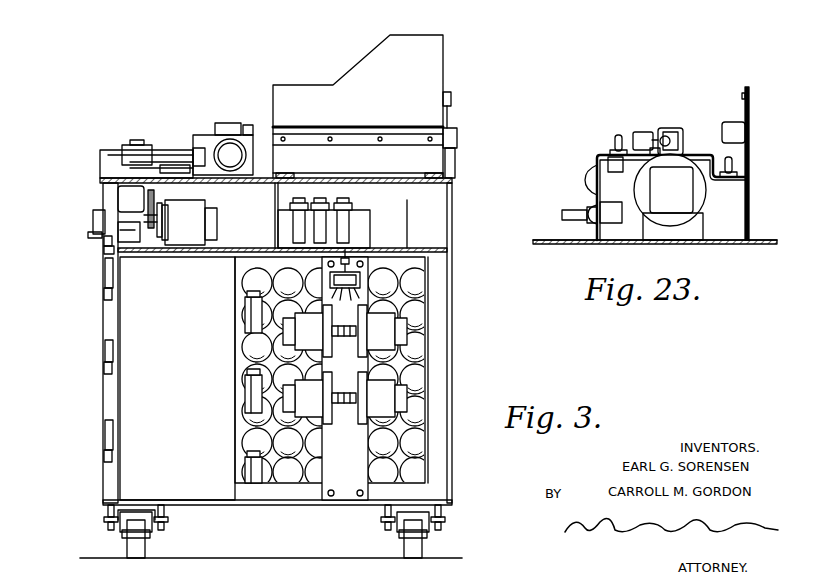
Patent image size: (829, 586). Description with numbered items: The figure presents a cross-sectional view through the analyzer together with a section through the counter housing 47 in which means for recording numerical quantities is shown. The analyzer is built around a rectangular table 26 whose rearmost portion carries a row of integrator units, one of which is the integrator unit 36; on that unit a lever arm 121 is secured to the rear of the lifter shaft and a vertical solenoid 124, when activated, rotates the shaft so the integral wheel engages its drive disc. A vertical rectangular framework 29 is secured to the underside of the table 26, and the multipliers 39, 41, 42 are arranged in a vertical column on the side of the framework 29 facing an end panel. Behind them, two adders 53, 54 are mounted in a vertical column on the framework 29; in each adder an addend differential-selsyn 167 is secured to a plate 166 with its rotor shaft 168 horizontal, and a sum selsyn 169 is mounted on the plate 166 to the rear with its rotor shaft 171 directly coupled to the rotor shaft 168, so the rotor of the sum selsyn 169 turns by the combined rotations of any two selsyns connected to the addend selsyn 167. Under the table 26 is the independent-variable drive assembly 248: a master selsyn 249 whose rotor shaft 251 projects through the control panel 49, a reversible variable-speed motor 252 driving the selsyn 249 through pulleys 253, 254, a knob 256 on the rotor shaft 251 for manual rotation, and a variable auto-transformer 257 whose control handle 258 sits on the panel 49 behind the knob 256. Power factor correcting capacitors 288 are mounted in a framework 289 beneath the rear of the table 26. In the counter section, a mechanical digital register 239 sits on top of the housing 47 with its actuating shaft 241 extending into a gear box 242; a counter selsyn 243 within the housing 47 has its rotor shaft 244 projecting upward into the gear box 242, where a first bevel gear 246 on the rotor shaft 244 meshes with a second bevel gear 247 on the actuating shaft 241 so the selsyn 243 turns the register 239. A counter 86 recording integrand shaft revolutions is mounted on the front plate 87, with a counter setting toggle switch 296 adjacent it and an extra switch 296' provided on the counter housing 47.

In FIG. 3, the table 26 is at (100, 178).
In FIG. 3, the integrator unit 36 is at (362, 50).
In FIG. 3, the lever arm 121 is at (451, 97).
In FIG. 3, the solenoid 124 is at (457, 135).
In FIG. 3, the motor 252 is at (118, 194).
In FIG. 3, the knob 256 is at (93, 220).
In FIG. 3, the control handle 258 is at (103, 244).
In FIG. 3, the control panel 49 is at (104, 252).
In FIG. 3, the multiplier 39 is at (100, 300).
In FIG. 3, the multiplier 41 is at (100, 371).
In FIG. 3, the framework 29 is at (110, 410).
In FIG. 3, the multiplier 42 is at (100, 457).
In FIG. 3, the pulley 253 is at (153, 206).
In FIG. 3, the pulley 254 is at (162, 213).
In FIG. 3, the master selsyn 249 is at (217, 226).
In FIG. 3, the rotor shaft 251 is at (133, 226).
In FIG. 3, the variable auto-transformer 257 is at (125, 232).
In FIG. 3, the independent-variable drive assembly 248 is at (178, 232).
In FIG. 3, the addend differential-selsyn 167 is at (289, 334).
In FIG. 3, the rotor shaft 168 is at (345, 338).
In FIG. 3, the sum selsyn 169 is at (402, 332).
In FIG. 3, the adder 53 is at (383, 336).
In FIG. 3, the adder 54 is at (375, 404).
In FIG. 3, the rotor shaft 171 is at (362, 290).
In FIG. 3, the plate 166 is at (346, 498).
In FIG. 3, the capacitor 288 is at (345, 204).
In FIG. 3, the framework 289 is at (363, 210).
In FIG. 23, the front plate 87 is at (752, 112).
In FIG. 23, the counter 86 is at (738, 131).
In FIG. 23, the rotor shaft 244 is at (668, 160).
In FIG. 23, the counter selsyn 243 is at (686, 200).
In FIG. 23, the gear box 242 is at (668, 128).
In FIG. 23, the second bevel gear 247 is at (672, 130).
In FIG. 23, the first bevel gear 246 is at (670, 145).
In FIG. 23, the actuating shaft 241 is at (655, 140).
In FIG. 23, the register 239 is at (638, 132).
In FIG. 23, the switch 296' is at (587, 133).
In FIG. 23, the counter setting toggle switch 296 is at (761, 172).
In FIG. 23, the housing 47 is at (597, 160).